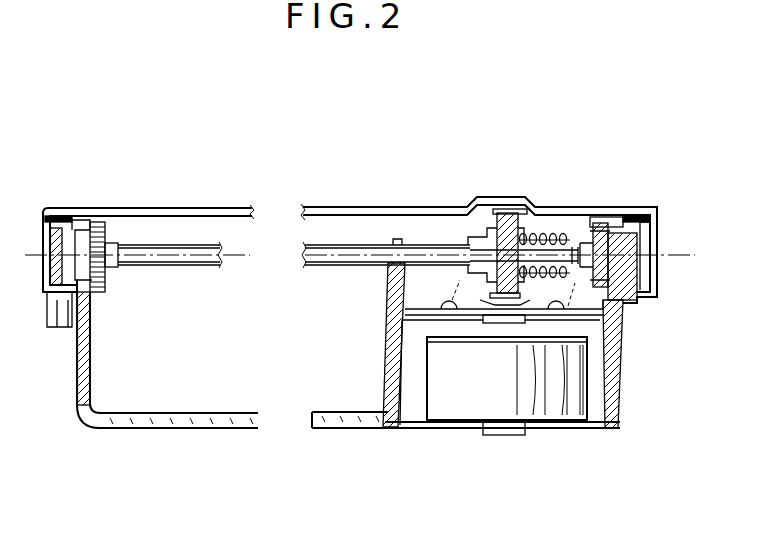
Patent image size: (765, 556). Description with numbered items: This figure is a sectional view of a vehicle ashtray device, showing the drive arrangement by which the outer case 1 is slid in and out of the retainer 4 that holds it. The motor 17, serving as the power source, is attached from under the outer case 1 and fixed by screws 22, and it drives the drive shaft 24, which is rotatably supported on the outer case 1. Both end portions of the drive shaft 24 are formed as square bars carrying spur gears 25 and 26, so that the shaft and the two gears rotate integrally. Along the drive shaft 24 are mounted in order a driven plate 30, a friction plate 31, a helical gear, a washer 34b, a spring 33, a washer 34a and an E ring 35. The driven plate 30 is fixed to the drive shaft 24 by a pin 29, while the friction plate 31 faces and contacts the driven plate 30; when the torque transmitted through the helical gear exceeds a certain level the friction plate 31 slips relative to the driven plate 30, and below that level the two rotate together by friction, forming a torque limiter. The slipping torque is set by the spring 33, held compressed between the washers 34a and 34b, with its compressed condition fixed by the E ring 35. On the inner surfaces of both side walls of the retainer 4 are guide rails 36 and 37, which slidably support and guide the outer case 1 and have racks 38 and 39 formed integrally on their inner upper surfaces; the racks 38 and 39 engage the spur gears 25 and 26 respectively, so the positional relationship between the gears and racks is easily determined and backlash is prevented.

The outer case 1 is at (342, 432).
The retainer 4 is at (325, 202).
The motor 17 is at (448, 407).
The screws 22 is at (448, 305).
The drive shaft 24 is at (355, 243).
The spur gear 25 is at (623, 295).
The spur gear 26 is at (103, 283).
The pin 29 is at (463, 238).
The driven plate 30 is at (481, 225).
The friction plate 31 is at (463, 320).
The spring 33 is at (548, 234).
The washer 34a is at (583, 432).
The washer 34b is at (537, 432).
The E ring 35 is at (576, 226).
The guide rail 36 is at (657, 221).
The guide rail 37 is at (45, 237).
The rack 38 is at (616, 220).
The rack 39 is at (127, 206).